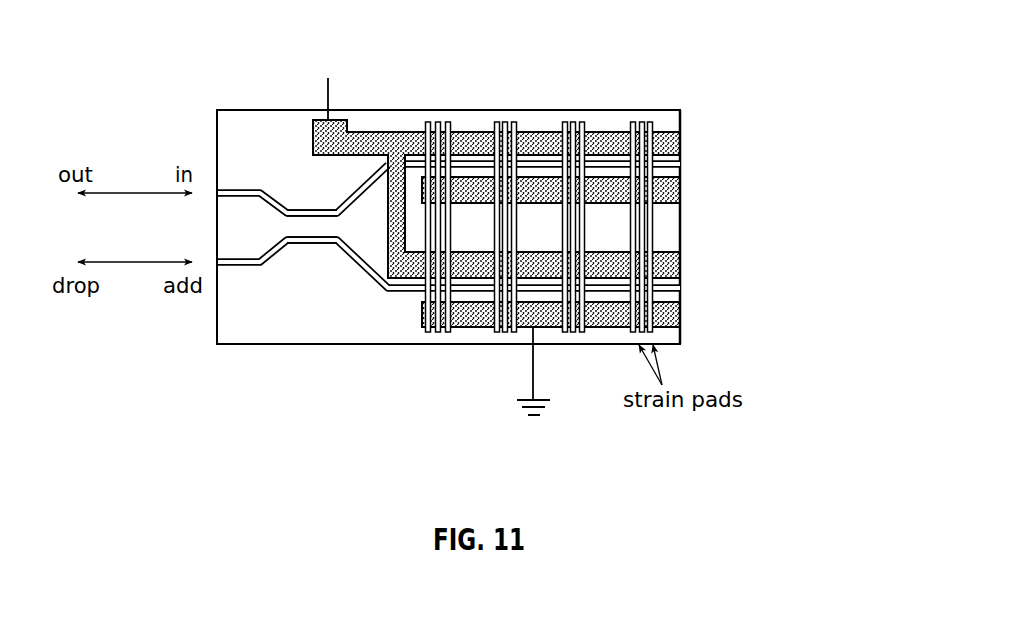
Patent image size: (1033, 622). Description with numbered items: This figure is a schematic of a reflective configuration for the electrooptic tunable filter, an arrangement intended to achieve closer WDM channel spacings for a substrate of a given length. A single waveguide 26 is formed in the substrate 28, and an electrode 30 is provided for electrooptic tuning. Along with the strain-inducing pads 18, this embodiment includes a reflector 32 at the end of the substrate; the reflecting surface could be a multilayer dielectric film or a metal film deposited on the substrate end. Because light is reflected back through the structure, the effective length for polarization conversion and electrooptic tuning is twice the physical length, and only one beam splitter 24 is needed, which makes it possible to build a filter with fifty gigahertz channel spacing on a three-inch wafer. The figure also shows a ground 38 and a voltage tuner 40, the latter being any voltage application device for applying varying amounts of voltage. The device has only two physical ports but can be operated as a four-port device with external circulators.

The strain-inducing pads 18 is at (717, 380).
The beam splitter 24 is at (325, 252).
The waveguide 26 is at (243, 275).
The substrate 28 is at (330, 345).
The electrode 30 is at (474, 128).
The reflector 32 is at (768, 200).
The ground 38 is at (575, 485).
The voltage tuner 40 is at (298, 27).